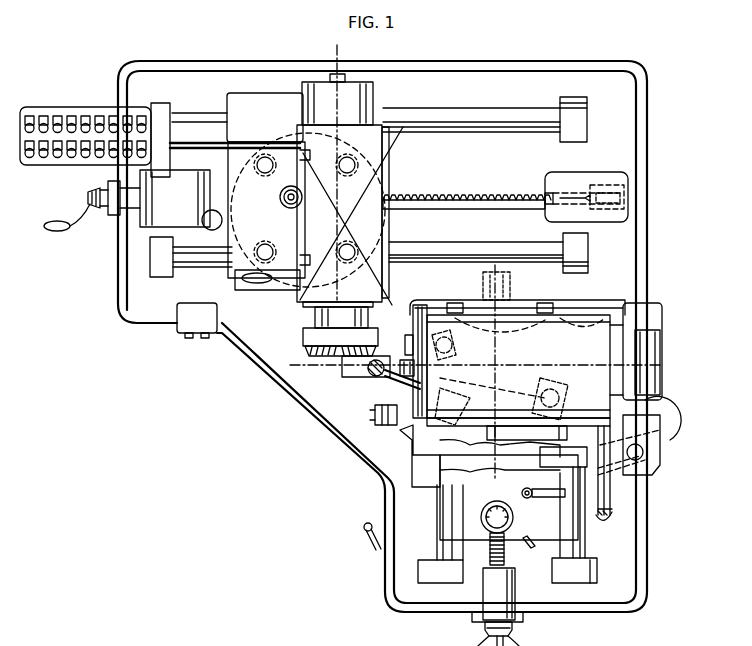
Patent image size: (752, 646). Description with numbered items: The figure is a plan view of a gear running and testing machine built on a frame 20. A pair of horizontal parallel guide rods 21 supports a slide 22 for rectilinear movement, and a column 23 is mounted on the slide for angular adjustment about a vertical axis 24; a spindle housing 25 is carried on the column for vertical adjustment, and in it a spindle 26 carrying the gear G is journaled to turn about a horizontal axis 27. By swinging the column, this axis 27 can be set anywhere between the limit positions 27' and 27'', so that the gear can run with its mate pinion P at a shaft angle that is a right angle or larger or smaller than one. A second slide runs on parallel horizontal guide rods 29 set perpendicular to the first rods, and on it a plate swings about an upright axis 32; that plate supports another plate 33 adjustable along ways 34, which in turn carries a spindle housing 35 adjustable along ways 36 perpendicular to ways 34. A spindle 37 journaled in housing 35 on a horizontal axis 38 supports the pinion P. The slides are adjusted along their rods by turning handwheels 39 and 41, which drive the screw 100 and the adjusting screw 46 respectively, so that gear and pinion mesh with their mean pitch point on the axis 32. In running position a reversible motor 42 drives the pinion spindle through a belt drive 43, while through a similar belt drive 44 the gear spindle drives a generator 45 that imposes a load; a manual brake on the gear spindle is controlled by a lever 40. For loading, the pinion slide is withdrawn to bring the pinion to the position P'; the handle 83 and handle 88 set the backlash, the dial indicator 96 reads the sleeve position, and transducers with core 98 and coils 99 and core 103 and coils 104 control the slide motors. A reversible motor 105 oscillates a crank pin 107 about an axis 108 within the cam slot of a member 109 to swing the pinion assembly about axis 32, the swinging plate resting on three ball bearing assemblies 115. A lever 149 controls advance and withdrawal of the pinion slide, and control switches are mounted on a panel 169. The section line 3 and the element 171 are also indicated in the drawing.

The section line 3 is at (503, 276).
The frame 20 is at (541, 162).
The guide rods 21 is at (500, 118).
The slide 22 is at (283, 117).
The column 23 is at (267, 211).
The vertical axis 24 is at (306, 208).
The spindle housing 25 is at (367, 192).
The spindle 26 is at (316, 320).
The horizontal axis 27 is at (390, 306).
The limit position 27' is at (267, 300).
The limit position 27'' is at (394, 220).
The guide rods 29 is at (437, 550).
The upright axis 32 is at (375, 355).
The plate 33 is at (573, 311).
The ways 34 is at (415, 317).
The spindle housing 35 is at (574, 358).
The ways 36 is at (512, 330).
The spindle 37 is at (406, 384).
The horizontal axis 38 is at (488, 363).
The handwheel 39 is at (82, 220).
The lever 40 is at (242, 275).
The handwheel 41 is at (520, 640).
The reversible motor 42 is at (529, 478).
The belt drive 43 is at (606, 518).
The belt drive 44 is at (245, 150).
The generator 45 is at (181, 199).
The adjusting screw 46 is at (505, 556).
The handle 83 is at (527, 537).
The handle 88 is at (563, 502).
The dial indicator 96 is at (484, 528).
The core 98 is at (482, 290).
The coils 99 is at (511, 291).
The screw 100 is at (451, 196).
The core 103 is at (608, 212).
The coils 104 is at (607, 185).
The reversible motor 105 is at (660, 315).
The crank pin 107 is at (660, 473).
The axis 108 is at (645, 426).
The member 109 is at (640, 458).
The ball bearing assemblies 115 is at (500, 382).
The lever 149 is at (366, 540).
The panel 169 is at (198, 334).
The connector 171 is at (34, 165).
The gear G is at (330, 365).
The pinion P is at (365, 377).
The pinion withdrawn position P' is at (371, 421).